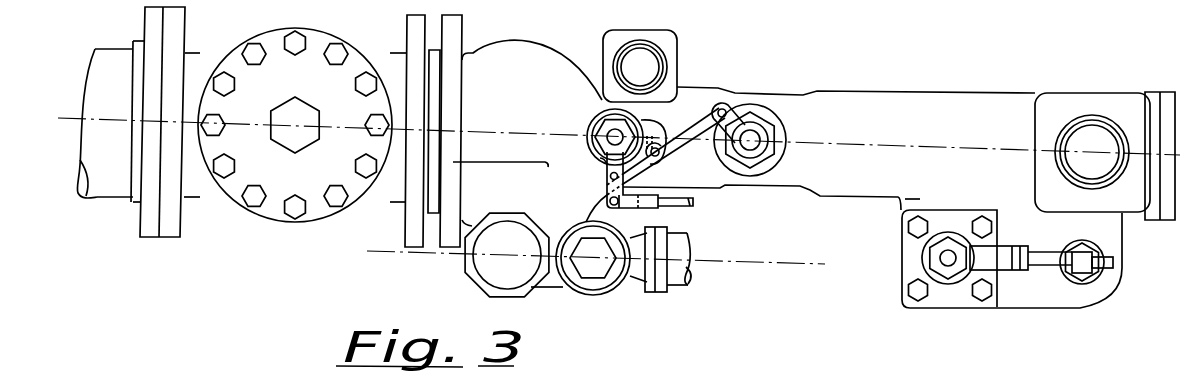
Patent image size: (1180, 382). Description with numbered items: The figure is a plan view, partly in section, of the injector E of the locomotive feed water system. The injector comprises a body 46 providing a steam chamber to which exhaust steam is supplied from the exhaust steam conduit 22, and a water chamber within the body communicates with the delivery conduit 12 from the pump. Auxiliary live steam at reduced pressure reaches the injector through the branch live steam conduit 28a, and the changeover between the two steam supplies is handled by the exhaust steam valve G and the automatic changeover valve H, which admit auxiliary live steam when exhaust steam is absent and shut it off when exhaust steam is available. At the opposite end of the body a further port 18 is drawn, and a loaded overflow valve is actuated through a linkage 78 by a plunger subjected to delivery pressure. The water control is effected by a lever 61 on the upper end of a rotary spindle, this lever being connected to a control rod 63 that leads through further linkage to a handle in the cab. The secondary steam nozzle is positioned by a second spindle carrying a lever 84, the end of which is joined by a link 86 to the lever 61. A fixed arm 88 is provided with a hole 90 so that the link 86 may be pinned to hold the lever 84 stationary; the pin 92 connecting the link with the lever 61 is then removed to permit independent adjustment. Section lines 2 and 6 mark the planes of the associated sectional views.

The section line 2- 2 is at (62, 121).
The section line 6- 6 is at (383, 254).
The delivery conduit 12 is at (648, 63).
The outlet port boss 18 is at (1087, 137).
The exhaust steam conduit 22 is at (113, 184).
The branch live steam conduit 28a is at (692, 274).
The injector body 46 is at (543, 51).
The lever 61 is at (607, 163).
The control rod 63 is at (690, 208).
The linkage 78 is at (1040, 263).
The lever 84 is at (737, 124).
The link 86 is at (681, 143).
The fixed arm 88 is at (660, 128).
The hole 90 is at (657, 154).
The pin 92 is at (608, 181).
The exhaust steam valve G is at (268, 210).
The automatic changeover valve H is at (551, 280).